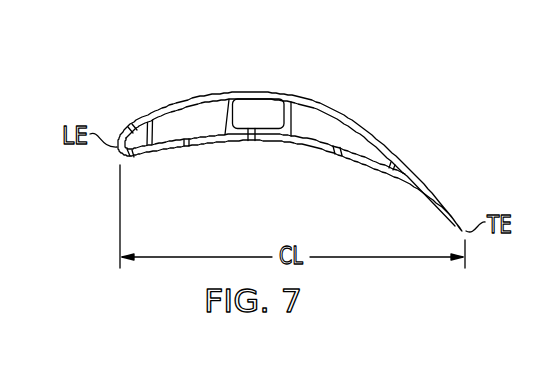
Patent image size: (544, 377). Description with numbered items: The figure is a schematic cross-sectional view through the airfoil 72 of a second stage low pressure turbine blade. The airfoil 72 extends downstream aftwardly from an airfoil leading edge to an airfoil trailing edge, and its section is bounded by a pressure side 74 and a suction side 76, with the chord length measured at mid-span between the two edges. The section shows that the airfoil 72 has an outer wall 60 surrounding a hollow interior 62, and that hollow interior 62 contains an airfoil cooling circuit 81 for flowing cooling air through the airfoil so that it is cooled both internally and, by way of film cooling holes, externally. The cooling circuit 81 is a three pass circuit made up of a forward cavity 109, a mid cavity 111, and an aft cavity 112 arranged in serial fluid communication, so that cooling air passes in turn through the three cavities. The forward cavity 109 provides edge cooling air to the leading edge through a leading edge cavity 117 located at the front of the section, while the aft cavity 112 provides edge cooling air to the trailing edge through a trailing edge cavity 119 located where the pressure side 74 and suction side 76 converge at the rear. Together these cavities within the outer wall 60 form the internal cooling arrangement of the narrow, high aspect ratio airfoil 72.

The outer wall 60 is at (270, 142).
The hollow interior 62 is at (306, 127).
The airfoil 72 is at (368, 207).
The pressure side 74 is at (149, 152).
The suction side 76 is at (226, 93).
The airfoil cooling circuit 81 is at (190, 122).
The forward cavity 109 is at (207, 130).
The mid cavity 111 is at (253, 106).
The aft cavity 112 is at (344, 140).
The leading edge cavity 117 is at (123, 128).
The trailing edge cavity 119 is at (405, 180).